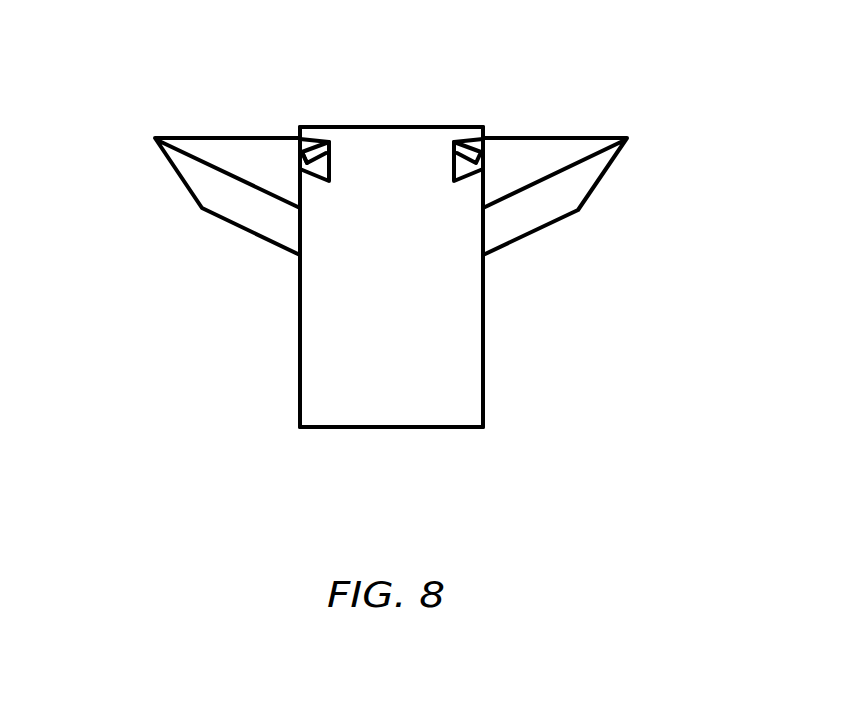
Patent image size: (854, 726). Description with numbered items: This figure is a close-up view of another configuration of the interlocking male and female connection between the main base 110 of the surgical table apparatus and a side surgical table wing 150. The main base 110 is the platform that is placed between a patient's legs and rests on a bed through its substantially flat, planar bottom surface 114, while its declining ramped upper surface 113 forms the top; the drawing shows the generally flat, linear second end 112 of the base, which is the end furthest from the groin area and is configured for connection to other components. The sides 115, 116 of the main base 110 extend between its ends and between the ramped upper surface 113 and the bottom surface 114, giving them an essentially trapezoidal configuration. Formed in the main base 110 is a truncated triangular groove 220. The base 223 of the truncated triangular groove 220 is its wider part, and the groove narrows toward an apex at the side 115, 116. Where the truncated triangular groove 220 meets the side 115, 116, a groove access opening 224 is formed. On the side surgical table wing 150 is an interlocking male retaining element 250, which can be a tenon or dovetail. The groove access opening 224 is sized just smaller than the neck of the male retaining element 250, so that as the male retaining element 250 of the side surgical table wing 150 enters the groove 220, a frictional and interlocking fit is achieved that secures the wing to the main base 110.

The main base 110 is at (397, 282).
The second end 112 is at (418, 303).
The declining ramped upper surface 113 is at (380, 127).
The substantially flat, planar bottom surface 114 is at (387, 427).
The side 115 is at (298, 365).
The side 116 is at (485, 349).
The side surgical table wing 150 is at (213, 193).
The truncated triangular groove 220 is at (305, 152).
The base of truncated triangular groove 223 is at (330, 142).
The groove access opening 224 is at (517, 173).
The male retaining element 250 is at (305, 162).